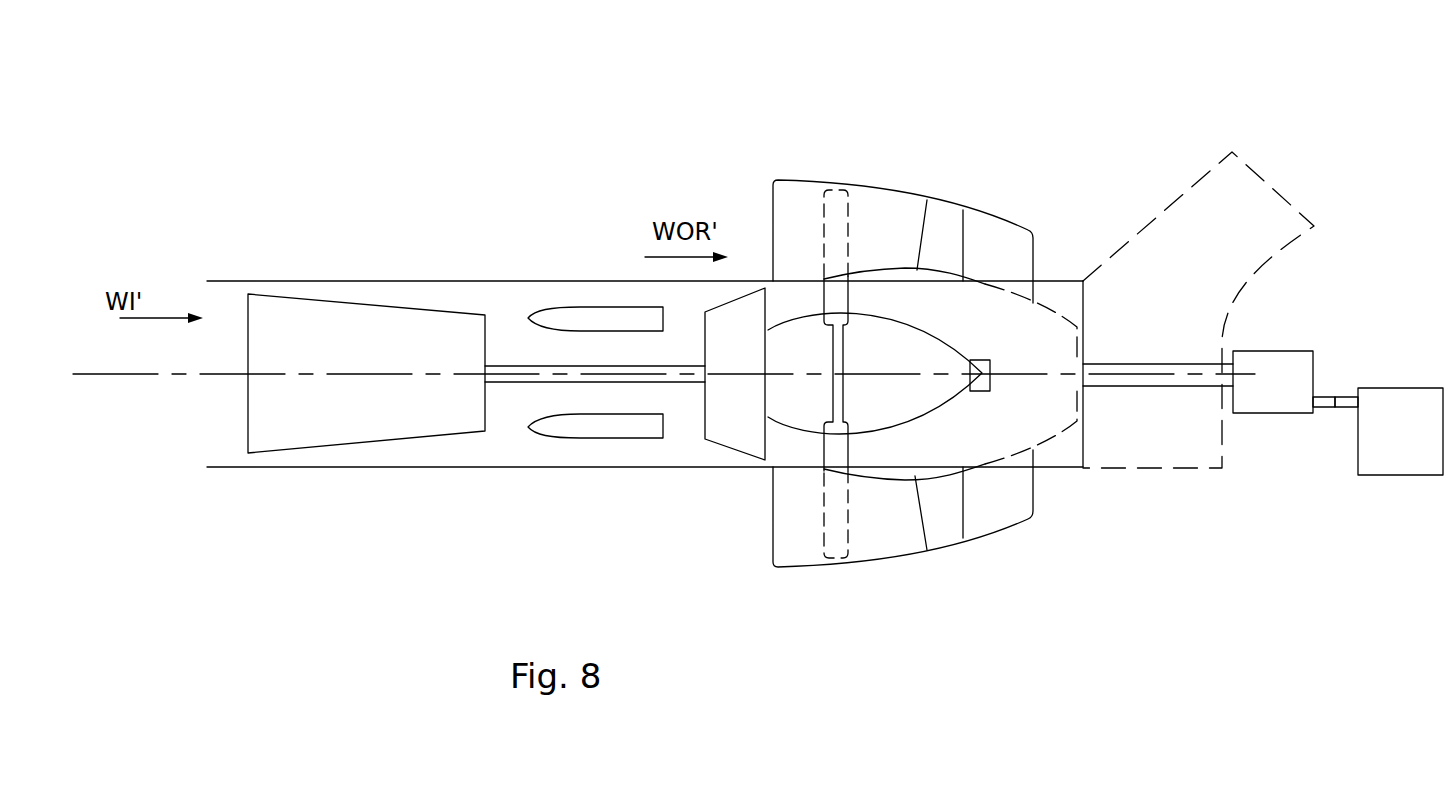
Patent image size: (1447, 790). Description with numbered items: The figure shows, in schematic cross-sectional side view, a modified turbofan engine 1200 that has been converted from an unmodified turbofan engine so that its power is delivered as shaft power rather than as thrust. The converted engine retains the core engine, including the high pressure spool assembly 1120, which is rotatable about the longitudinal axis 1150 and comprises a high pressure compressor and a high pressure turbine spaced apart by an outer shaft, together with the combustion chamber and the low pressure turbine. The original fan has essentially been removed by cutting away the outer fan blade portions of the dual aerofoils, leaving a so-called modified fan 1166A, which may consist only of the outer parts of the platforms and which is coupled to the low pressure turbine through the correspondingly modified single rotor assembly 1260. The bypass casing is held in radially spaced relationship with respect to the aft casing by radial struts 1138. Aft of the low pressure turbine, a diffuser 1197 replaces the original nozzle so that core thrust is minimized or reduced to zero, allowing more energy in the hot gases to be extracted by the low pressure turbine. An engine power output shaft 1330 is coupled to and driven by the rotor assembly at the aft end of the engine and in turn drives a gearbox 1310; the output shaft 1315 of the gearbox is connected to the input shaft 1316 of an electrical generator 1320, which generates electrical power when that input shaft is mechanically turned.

The modified turbofan engine 1200 is at (894, 308).
The high pressure spool assembly 1120 is at (352, 446).
The longitudinal axis 1150 is at (193, 375).
The modified fan 1166A is at (823, 277).
The modified single rotor assembly 1260 is at (851, 278).
The radial struts 1138 is at (947, 250).
The diffuser 1197 is at (1067, 468).
The engine power output shaft 1330 is at (1137, 383).
The gearbox 1310 is at (1257, 415).
The output shaft 1315 is at (1329, 393).
The input shaft 1316 is at (1352, 387).
The electrical generator 1320 is at (1387, 475).